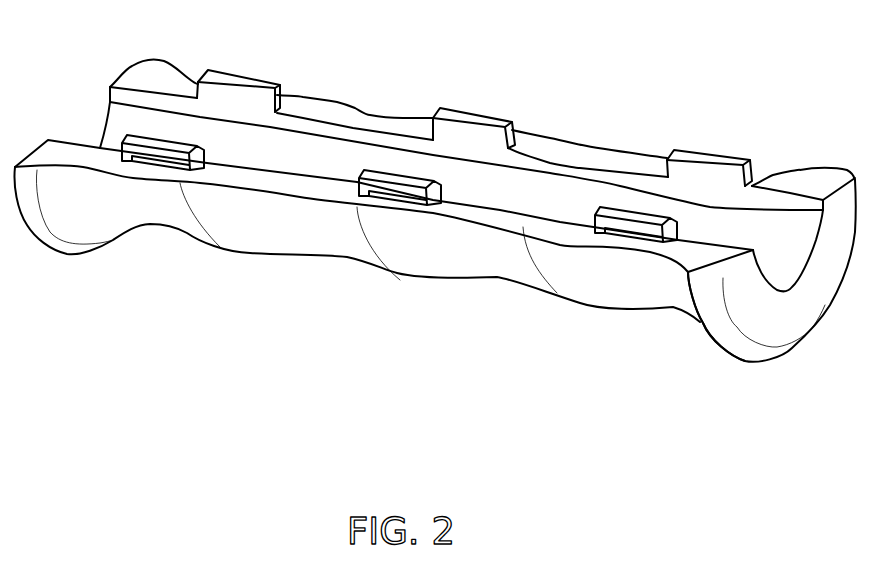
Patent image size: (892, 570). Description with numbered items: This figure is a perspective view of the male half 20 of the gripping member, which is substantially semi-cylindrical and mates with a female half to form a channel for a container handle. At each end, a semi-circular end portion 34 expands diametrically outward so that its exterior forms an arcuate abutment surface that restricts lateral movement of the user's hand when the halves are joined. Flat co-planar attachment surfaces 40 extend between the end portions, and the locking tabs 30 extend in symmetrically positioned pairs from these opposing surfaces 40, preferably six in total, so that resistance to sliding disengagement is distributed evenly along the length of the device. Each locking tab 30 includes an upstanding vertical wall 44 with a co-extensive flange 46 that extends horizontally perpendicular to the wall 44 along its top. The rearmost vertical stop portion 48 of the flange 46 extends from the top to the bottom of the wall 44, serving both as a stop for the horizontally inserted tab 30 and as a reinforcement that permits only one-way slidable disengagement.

The male half 20 is at (203, 232).
The locking tab 30 is at (478, 110).
The end portion 34 is at (680, 312).
The attachment surface 40 is at (583, 150).
The wall 44 is at (707, 168).
The flange 46 is at (253, 82).
The stop portion 48 is at (360, 176).